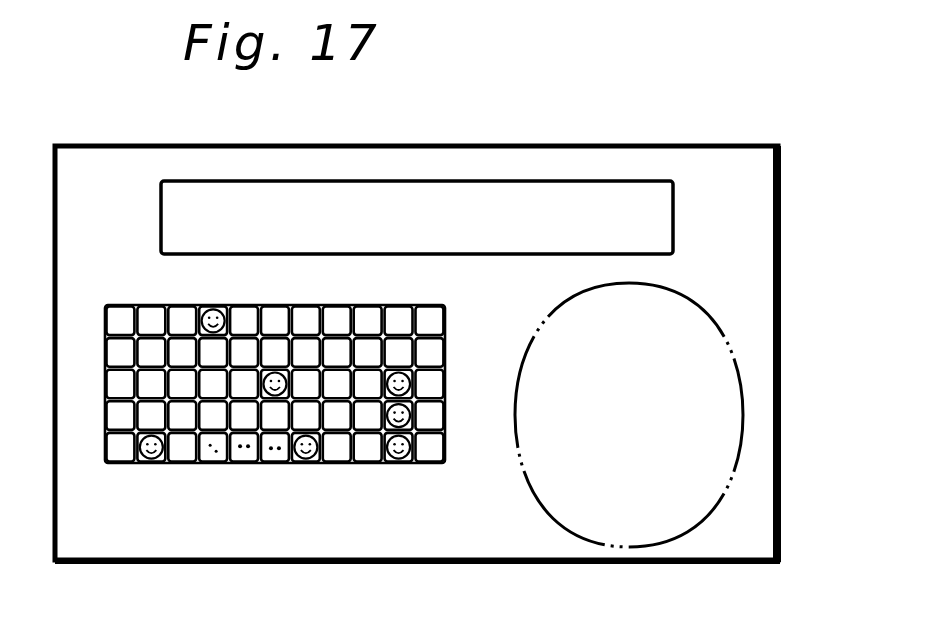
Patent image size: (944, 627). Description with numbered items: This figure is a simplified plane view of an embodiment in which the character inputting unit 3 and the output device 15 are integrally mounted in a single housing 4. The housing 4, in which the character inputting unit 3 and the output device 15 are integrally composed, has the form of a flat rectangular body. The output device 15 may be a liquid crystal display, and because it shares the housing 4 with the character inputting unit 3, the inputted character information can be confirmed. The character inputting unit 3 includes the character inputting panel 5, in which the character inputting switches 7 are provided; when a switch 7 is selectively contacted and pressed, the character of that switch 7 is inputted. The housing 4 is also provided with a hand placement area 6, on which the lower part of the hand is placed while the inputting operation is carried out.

The character inputting unit 3 is at (232, 400).
The housing 4 is at (755, 197).
The character inputting panel 5 is at (232, 457).
The hand placement area 6 is at (715, 377).
The character inputting switches 7 is at (128, 463).
The output device 15 is at (461, 200).